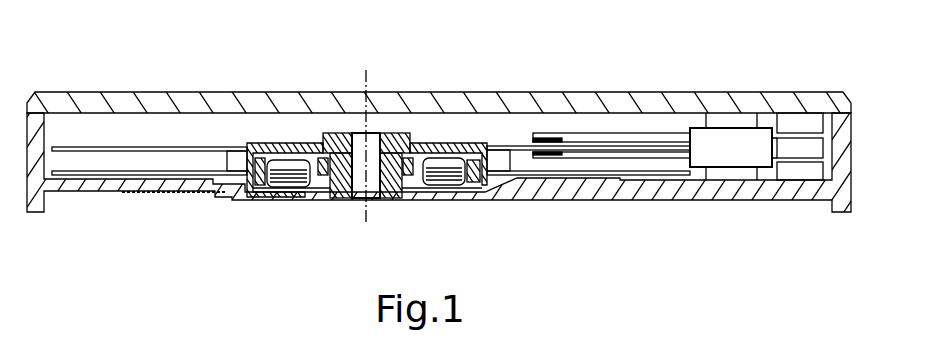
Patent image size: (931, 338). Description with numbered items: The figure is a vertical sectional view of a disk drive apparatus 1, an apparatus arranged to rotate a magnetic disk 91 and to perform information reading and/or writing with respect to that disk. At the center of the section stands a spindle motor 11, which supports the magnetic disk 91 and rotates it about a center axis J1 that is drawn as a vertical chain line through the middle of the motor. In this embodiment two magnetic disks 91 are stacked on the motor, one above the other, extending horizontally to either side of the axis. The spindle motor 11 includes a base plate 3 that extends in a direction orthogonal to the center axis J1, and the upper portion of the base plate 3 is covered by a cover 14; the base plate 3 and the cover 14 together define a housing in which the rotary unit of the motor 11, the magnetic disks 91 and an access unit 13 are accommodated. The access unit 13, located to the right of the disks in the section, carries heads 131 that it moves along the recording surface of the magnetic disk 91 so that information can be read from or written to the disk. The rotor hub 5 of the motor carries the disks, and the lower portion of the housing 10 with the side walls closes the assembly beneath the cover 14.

The disk drive apparatus 1 is at (465, 169).
The base plate 10 is at (832, 211).
The cover 14 is at (218, 105).
The magnetic disk 91 is at (128, 147).
The center axis J1 is at (366, 72).
The spindle motor 11 is at (367, 148).
The rotor hub 5 is at (303, 150).
The base plate 3 is at (313, 188).
The access unit 13 is at (678, 142).
The head 131 is at (542, 142).